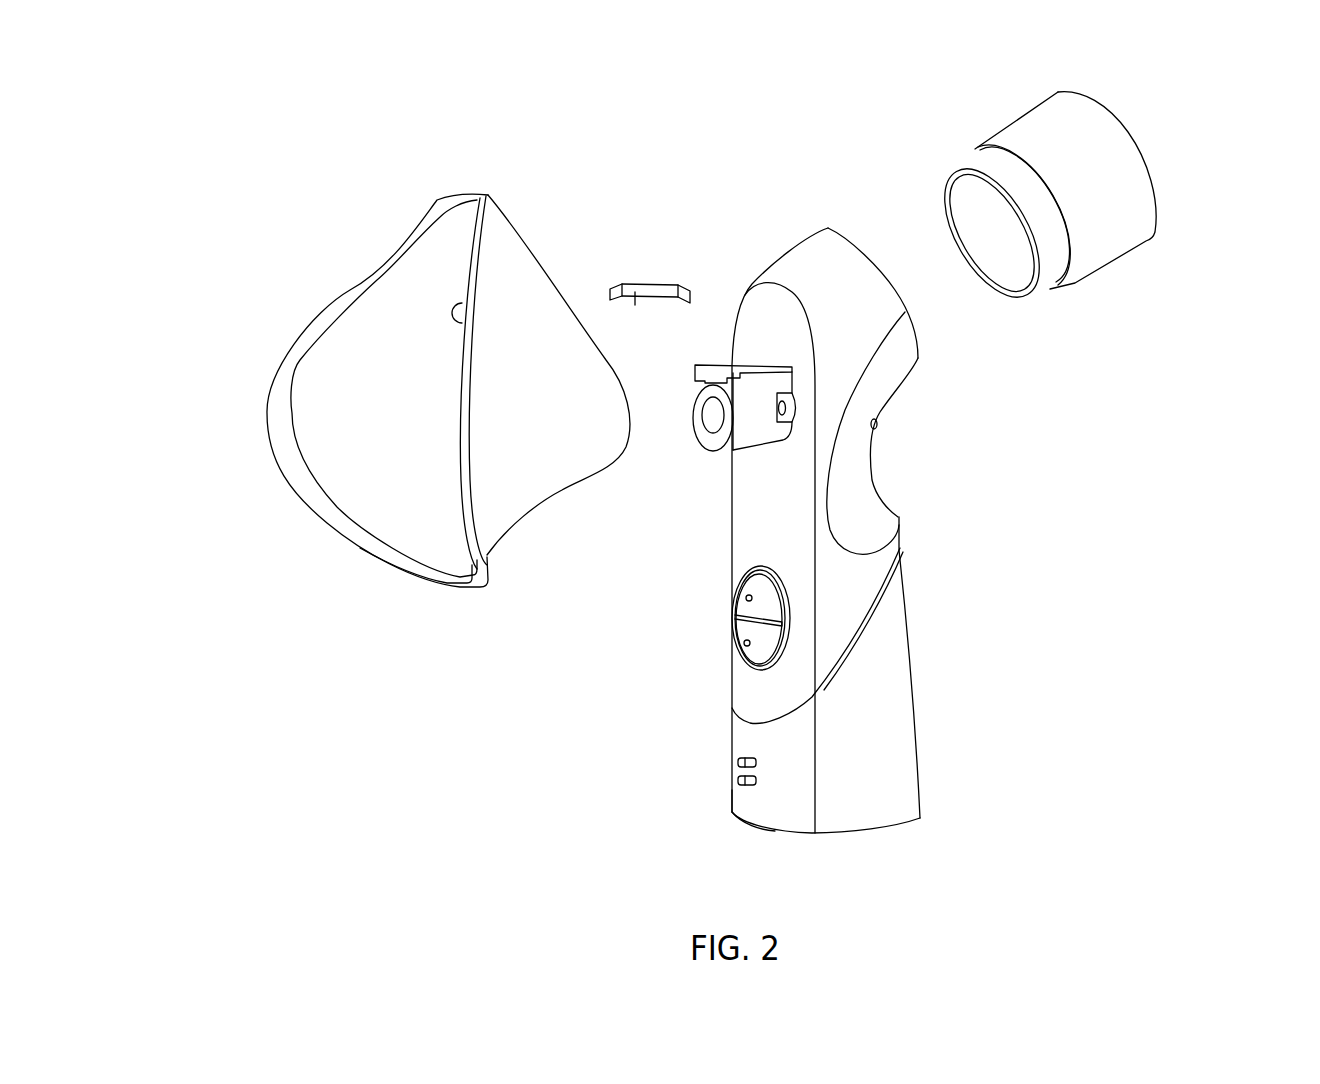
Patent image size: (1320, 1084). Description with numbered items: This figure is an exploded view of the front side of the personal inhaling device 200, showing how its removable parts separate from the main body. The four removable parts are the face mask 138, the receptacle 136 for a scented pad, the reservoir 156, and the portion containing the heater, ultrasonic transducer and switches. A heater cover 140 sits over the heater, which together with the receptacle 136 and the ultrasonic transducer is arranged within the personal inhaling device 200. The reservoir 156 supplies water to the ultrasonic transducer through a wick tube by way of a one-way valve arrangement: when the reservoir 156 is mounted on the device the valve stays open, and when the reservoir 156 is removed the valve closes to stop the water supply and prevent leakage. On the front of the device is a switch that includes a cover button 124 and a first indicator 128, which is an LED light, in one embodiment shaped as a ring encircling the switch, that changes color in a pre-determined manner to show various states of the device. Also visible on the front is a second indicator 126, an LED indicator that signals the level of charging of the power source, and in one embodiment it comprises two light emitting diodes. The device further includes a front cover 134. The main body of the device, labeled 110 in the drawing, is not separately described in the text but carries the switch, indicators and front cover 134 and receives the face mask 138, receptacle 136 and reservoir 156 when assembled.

The personal inhaling device 200 is at (230, 132).
The nebulizer body 110 is at (865, 743).
The cover button 124 is at (748, 600).
The second indicator 126 is at (737, 773).
The first indicator 128 is at (742, 644).
The front cover 134 is at (722, 812).
The receptacle 136 is at (638, 283).
The face mask 138 is at (363, 391).
The heater cover 140 is at (705, 362).
The reservoir 156 is at (1083, 180).